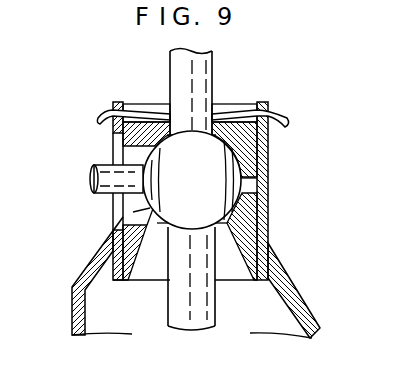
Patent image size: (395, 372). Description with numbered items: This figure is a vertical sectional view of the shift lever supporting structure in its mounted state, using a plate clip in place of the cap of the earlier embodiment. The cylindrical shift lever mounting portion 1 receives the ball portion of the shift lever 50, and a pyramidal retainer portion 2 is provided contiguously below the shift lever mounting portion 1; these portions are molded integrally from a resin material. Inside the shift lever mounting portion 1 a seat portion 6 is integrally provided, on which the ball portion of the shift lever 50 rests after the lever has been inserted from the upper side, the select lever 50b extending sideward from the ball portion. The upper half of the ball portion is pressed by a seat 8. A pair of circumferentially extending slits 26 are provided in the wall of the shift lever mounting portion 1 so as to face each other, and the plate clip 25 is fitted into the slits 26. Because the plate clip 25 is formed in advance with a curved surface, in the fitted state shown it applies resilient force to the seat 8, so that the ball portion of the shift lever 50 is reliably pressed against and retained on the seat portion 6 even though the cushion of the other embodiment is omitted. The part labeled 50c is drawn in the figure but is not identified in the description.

The shift lever mounting portion 1 is at (268, 207).
The retainer portion 2 is at (306, 303).
The seat portion 6 is at (238, 218).
The seat 8 is at (247, 155).
The plate clip 25 is at (282, 122).
The slits 26 is at (163, 116).
The shift lever 50 is at (213, 63).
The select lever 50b is at (104, 167).
The arm portion 50c is at (133, 212).